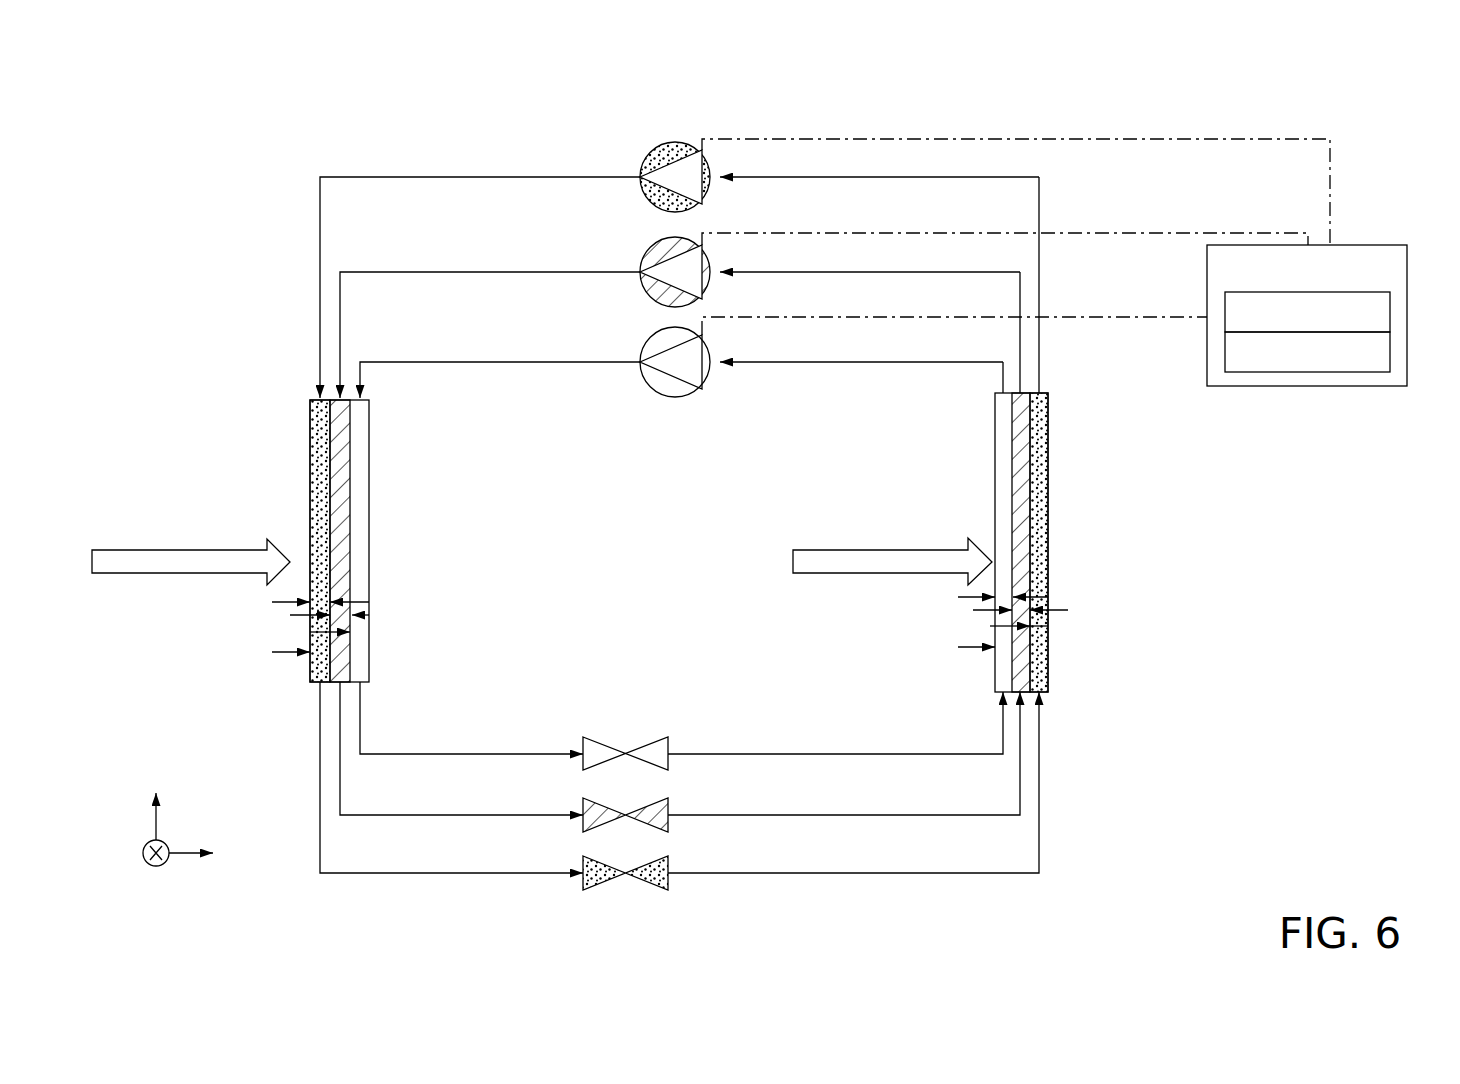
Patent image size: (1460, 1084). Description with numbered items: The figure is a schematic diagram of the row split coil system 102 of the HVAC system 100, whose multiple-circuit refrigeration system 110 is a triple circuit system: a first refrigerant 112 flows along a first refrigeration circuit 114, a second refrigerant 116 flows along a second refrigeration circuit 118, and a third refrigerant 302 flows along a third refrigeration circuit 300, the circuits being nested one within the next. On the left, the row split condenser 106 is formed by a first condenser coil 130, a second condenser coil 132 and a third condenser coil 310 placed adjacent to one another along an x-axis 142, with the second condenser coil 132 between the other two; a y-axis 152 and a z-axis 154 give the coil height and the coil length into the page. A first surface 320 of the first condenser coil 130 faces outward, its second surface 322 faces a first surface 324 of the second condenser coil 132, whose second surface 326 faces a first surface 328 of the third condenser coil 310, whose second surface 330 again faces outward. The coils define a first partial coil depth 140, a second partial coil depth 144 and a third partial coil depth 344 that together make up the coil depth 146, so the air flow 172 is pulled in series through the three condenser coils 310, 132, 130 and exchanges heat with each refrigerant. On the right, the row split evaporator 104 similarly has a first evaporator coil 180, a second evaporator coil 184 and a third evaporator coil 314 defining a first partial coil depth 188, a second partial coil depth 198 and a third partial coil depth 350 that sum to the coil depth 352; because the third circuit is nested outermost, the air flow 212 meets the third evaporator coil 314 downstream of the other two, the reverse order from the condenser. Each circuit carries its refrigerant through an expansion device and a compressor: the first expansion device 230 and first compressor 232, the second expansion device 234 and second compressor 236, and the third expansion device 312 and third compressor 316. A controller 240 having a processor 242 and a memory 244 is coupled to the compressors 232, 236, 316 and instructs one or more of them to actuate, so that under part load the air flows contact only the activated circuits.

The HVAC system 100 is at (520, 98).
The row split coil system 102 is at (915, 105).
The row split evaporator 104 is at (1041, 561).
The row split condenser 106 is at (319, 559).
The multiple-circuit refrigeration system 110 is at (850, 888).
The first refrigerant 112 is at (800, 753).
The first refrigeration circuit 114 is at (913, 750).
The second refrigerant 116 is at (800, 814).
The second refrigeration circuit 118 is at (913, 810).
The first condenser coil 130 is at (340, 530).
The second condenser coil 132 is at (347, 462).
The first partial coil depth 140 is at (369, 632).
The x-axis 142 is at (186, 852).
The second partial coil depth 144 is at (369, 615).
The coil depth 146 is at (369, 652).
The y-axis 152 is at (153, 820).
The z-axis 154 is at (156, 868).
The air flow 172 is at (145, 550).
The first evaporator coil 180 is at (1014, 529).
The second evaporator coil 184 is at (1008, 456).
The first partial coil depth 188 is at (973, 610).
The second partial coil depth 198 is at (990, 626).
The air flow 212 is at (793, 561).
The first expansion device 230 is at (660, 732).
The first compressor 232 is at (634, 357).
The second expansion device 234 is at (673, 800).
The second compressor 236 is at (636, 266).
The controller 240 is at (1335, 245).
The processor 242 is at (1390, 311).
The memory 244 is at (1390, 351).
The third refrigeration circuit 300 is at (912, 868).
The third refrigerant 302 is at (800, 873).
The third condenser coil 310 is at (307, 435).
The third expansion device 312 is at (675, 860).
The third evaporator coil 314 is at (1055, 438).
The third compressor 316 is at (677, 140).
The first surface 320 is at (336, 485).
The second surface 322 is at (340, 512).
The first surface 324 is at (332, 556).
The second surface 326 is at (330, 562).
The first surface 328 is at (340, 460).
The second surface 330 is at (310, 680).
The third partial coil depth 344 is at (290, 615).
The third partial coil depth 350 is at (1050, 625).
The coil depth 352 is at (1050, 647).